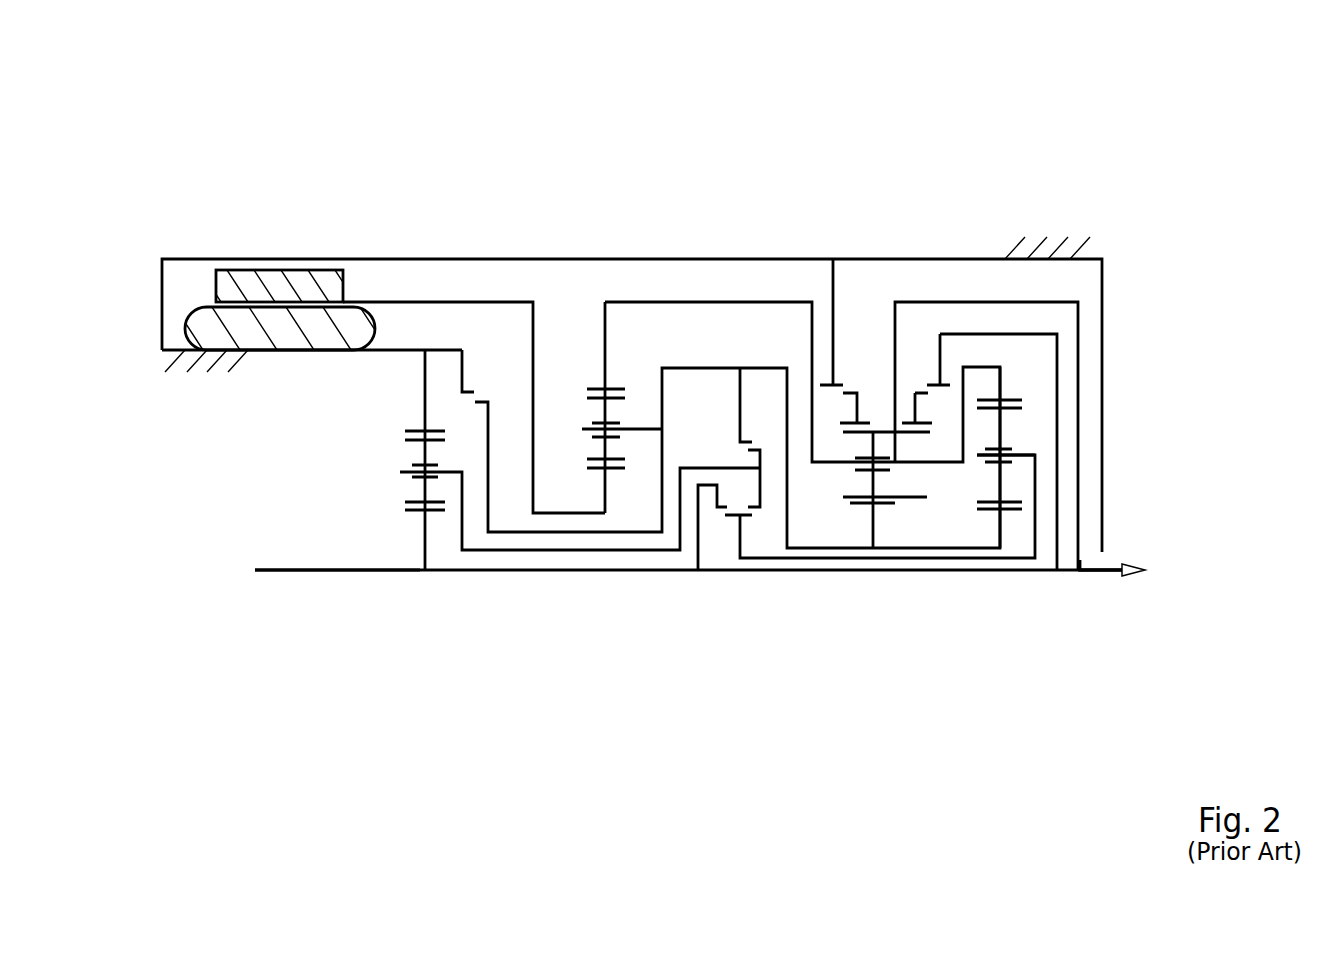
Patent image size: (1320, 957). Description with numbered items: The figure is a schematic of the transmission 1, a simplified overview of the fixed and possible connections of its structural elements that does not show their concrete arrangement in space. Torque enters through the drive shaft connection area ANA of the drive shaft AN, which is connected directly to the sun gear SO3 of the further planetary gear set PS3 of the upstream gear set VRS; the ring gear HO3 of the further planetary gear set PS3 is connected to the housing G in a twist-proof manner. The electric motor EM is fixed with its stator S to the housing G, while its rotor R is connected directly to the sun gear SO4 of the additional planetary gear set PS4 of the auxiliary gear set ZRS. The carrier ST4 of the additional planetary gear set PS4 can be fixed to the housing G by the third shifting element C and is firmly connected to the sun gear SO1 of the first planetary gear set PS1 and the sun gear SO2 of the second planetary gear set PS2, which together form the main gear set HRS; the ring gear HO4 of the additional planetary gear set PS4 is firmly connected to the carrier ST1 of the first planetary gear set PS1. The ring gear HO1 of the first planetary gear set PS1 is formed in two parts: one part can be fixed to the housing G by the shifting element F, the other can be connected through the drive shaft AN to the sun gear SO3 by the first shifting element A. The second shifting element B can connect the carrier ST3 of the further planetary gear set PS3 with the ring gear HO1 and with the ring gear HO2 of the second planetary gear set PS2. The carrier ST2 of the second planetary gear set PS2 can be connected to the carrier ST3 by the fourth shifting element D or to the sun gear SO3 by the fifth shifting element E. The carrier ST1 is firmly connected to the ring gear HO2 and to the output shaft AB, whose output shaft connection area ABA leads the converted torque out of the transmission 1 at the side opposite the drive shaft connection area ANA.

The transmission 1 is at (710, 158).
The electric motor EM is at (229, 252).
The rotor R is at (271, 290).
The stator S is at (345, 338).
The housing G is at (1046, 253).
The ring gear of the further planetary gear set HO3 is at (413, 430).
The third shifting element C is at (484, 384).
The ring gear of the additional planetary gear set HO4 is at (595, 388).
The carrier of the additional planetary gear set ST4 is at (637, 428).
The second shifting element B is at (759, 428).
The shifting element F is at (850, 375).
The ring gear of the first planetary gear set HO1 is at (906, 422).
The first shifting element A is at (925, 375).
The ring gear of the second planetary gear set HO2 is at (1008, 398).
The carrier of the second planetary gear set ST2 is at (1022, 452).
The output shaft connection area ABA is at (1121, 559).
The carrier of the further planetary gear set ST3 is at (398, 465).
The drive shaft connection area ANA is at (289, 568).
The drive shaft AN is at (378, 568).
The further planetary gear set PS3 is at (425, 616).
The upstream gear set VRS is at (419, 458).
The sun gear of the further planetary gear set SO3 is at (436, 512).
The sun gear of the additional planetary gear set SO4 is at (595, 470).
The additional planetary gear set PS4 is at (605, 616).
The auxiliary gear set ZRS is at (611, 458).
The fifth shifting element E is at (715, 524).
The fourth shifting element D is at (759, 524).
The carrier of the first planetary gear set ST1 is at (830, 465).
The sun gear of the first planetary gear set SO1 is at (855, 505).
The first planetary gear set PS1 is at (875, 616).
The second planetary gear set PS2 is at (998, 616).
The main gear set HRS is at (1025, 690).
The sun gear of the second planetary gear set SO2 is at (1012, 512).
The output shaft AB is at (1094, 570).